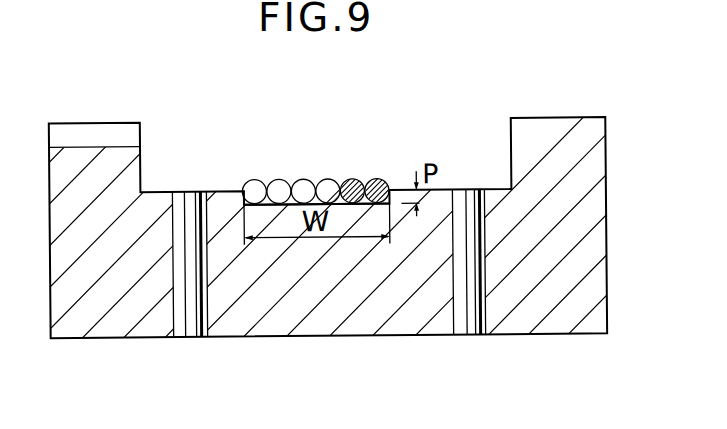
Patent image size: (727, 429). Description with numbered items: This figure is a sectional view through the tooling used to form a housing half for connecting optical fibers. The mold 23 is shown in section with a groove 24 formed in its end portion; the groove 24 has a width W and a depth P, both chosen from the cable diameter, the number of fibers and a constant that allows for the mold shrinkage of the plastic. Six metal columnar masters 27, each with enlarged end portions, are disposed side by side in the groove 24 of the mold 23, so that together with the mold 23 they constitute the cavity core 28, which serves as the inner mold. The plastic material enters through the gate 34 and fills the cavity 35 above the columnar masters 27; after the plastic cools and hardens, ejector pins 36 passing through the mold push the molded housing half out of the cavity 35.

The mold 23 is at (597, 153).
The groove 24 is at (367, 204).
The columnar master 27 is at (377, 180).
The cavity core 28 is at (454, 126).
The gate 34 is at (92, 145).
The cavity 35 is at (184, 147).
The ejector pins 36 is at (188, 328).